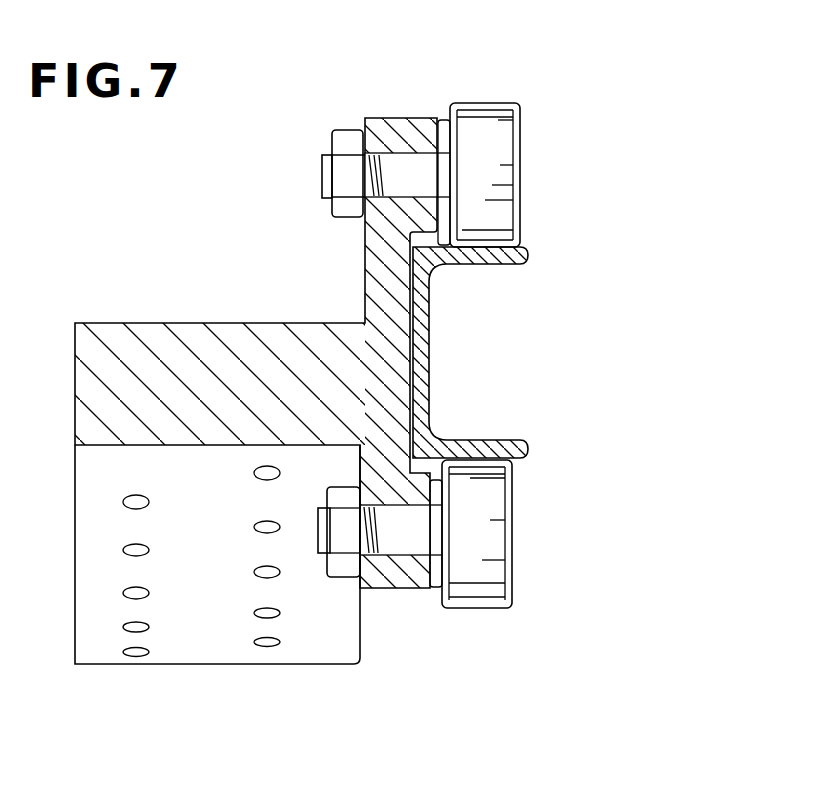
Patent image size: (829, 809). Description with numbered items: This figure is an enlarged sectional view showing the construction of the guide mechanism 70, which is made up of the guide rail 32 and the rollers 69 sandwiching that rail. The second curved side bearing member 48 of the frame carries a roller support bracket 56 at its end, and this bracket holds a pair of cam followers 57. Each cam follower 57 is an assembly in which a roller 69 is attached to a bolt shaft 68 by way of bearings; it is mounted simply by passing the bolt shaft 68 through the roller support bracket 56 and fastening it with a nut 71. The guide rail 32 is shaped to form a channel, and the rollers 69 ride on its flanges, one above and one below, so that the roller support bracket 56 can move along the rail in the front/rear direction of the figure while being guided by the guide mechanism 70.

The guide rail 32 is at (430, 362).
The second curved side bearing member 48 is at (205, 640).
The roller support bracket 56 is at (365, 273).
The cam follower 57 is at (524, 182).
The bolt shaft 68 is at (322, 177).
The roller 69 is at (483, 103).
The guide mechanism 70 is at (538, 352).
The nut 71 is at (351, 130).